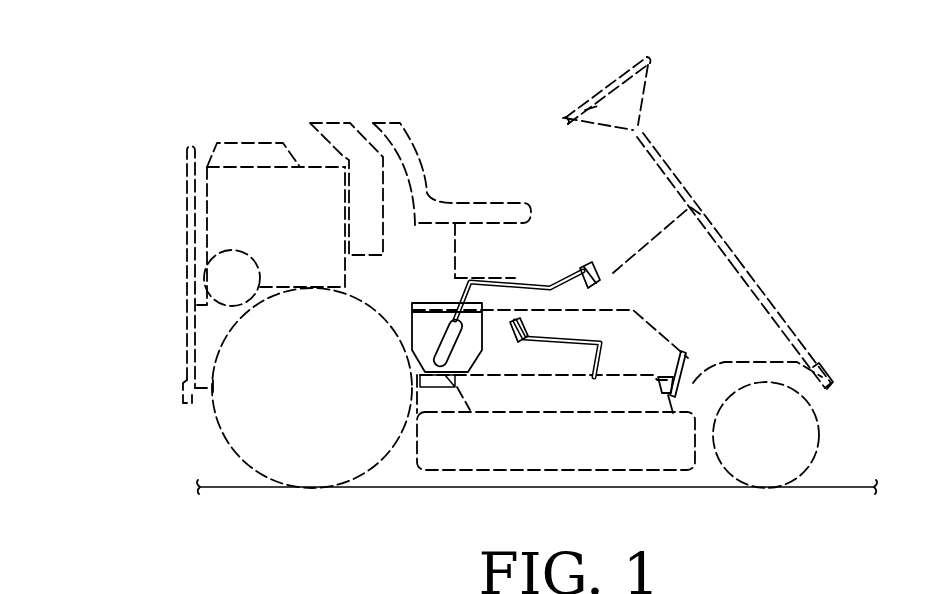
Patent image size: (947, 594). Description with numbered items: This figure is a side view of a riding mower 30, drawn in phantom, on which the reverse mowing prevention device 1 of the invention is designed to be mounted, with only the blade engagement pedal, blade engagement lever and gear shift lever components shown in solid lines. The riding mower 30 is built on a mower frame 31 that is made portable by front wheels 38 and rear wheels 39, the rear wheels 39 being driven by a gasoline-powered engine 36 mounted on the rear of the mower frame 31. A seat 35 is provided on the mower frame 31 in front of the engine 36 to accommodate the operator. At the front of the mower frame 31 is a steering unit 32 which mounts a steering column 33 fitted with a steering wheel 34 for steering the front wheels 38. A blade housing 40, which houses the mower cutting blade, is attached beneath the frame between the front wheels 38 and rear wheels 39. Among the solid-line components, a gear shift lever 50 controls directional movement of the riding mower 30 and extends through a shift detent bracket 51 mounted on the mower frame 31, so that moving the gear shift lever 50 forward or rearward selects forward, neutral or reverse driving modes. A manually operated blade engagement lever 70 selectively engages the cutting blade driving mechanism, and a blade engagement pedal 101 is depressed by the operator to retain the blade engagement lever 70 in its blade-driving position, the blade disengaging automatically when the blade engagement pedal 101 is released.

The reverse mowing prevention device 1 is at (858, 592).
The riding mower 30 is at (717, 223).
The mower frame 31 is at (517, 277).
The steering unit 32 is at (773, 302).
The steering column 33 is at (655, 155).
The steering wheel 34 is at (650, 82).
The seat 35 is at (408, 143).
The engine 36 is at (263, 140).
The front wheels 38 is at (820, 431).
The rear wheels 39 is at (227, 440).
The blade housing 40 is at (470, 470).
The gear shift lever 50 is at (584, 268).
The shift detent bracket 51 is at (413, 327).
The blade engagement lever 70 is at (593, 325).
The blade engagement pedal 101 is at (685, 352).